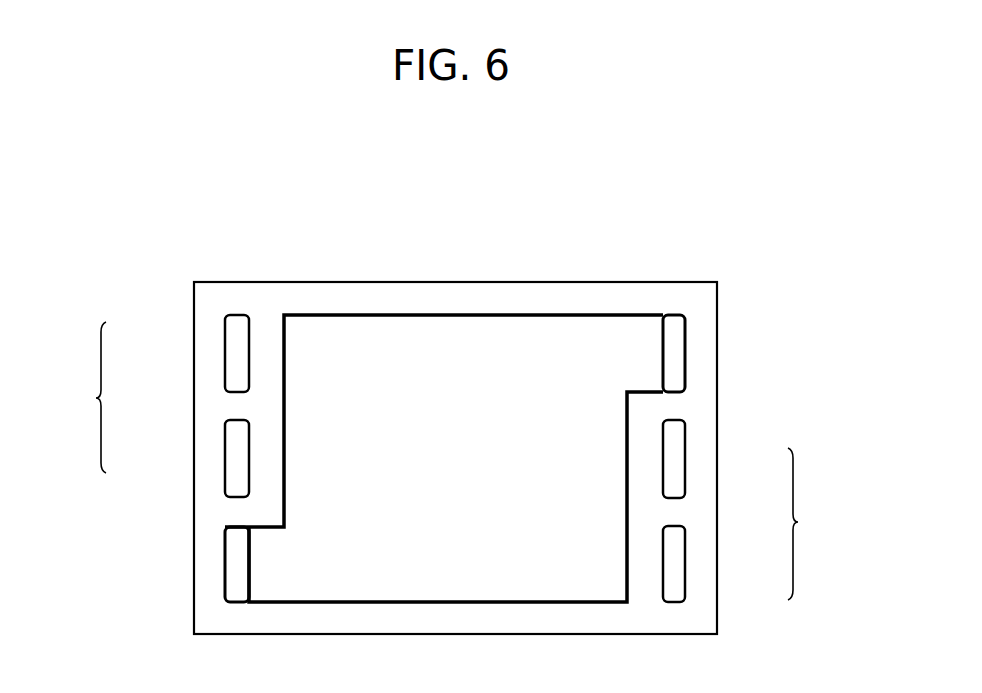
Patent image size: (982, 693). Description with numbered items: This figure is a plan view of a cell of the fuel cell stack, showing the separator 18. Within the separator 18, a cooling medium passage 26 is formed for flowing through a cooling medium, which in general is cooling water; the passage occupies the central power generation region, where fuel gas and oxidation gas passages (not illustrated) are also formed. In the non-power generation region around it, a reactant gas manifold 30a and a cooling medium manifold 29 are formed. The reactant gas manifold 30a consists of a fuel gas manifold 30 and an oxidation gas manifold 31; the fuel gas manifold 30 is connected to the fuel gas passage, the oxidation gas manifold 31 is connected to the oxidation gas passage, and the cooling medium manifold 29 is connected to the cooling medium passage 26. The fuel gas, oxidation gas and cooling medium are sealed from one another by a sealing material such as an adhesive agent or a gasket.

The separator 18 is at (582, 282).
The cooling medium passage 26 is at (378, 350).
The cooling medium manifold 29 is at (672, 355).
The fuel gas manifold 30 is at (238, 342).
The oxidation gas manifold 31 is at (237, 455).
The reactant gas manifold 30a is at (449, 461).